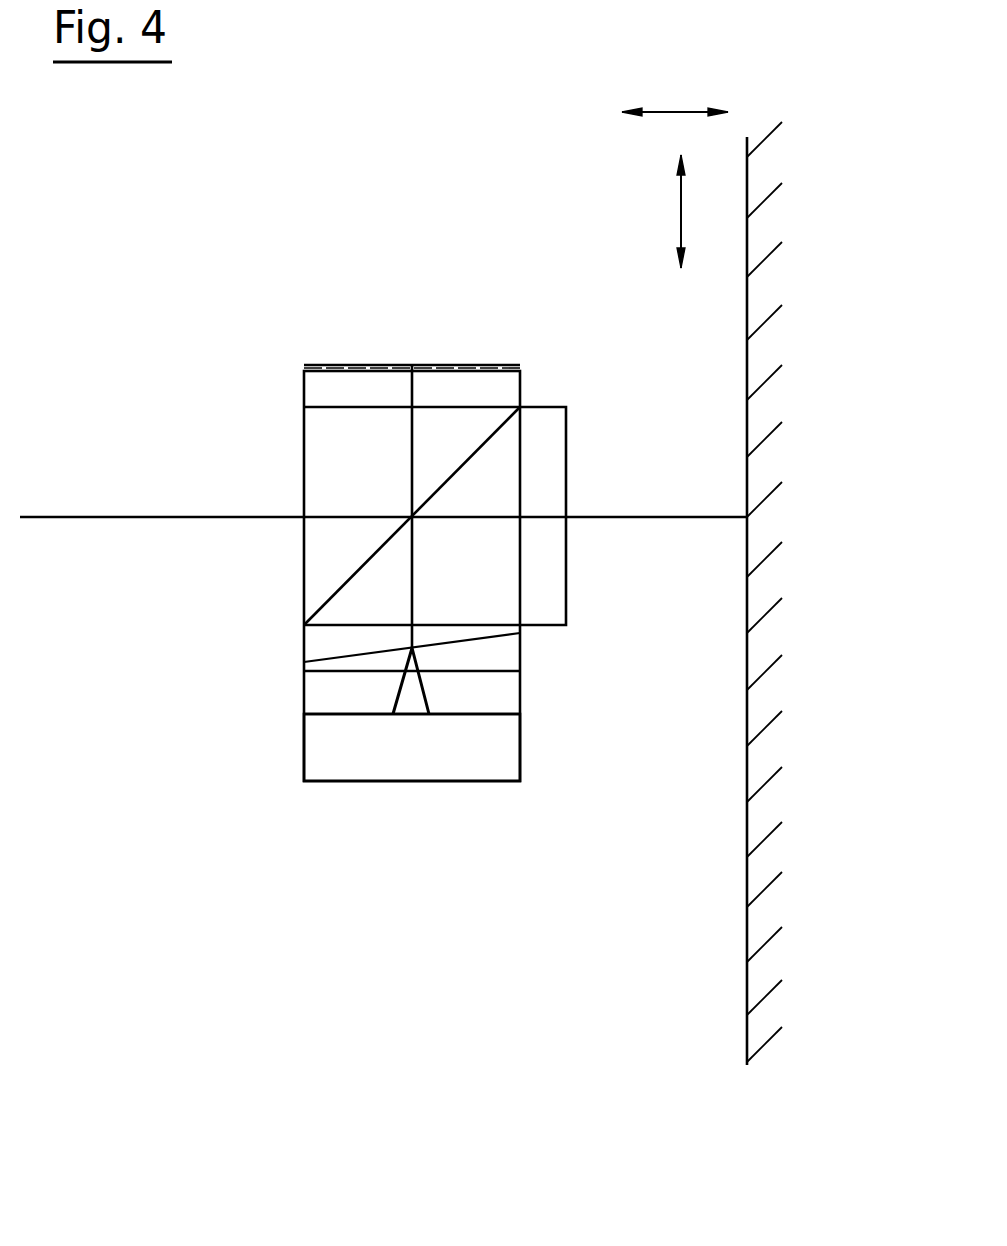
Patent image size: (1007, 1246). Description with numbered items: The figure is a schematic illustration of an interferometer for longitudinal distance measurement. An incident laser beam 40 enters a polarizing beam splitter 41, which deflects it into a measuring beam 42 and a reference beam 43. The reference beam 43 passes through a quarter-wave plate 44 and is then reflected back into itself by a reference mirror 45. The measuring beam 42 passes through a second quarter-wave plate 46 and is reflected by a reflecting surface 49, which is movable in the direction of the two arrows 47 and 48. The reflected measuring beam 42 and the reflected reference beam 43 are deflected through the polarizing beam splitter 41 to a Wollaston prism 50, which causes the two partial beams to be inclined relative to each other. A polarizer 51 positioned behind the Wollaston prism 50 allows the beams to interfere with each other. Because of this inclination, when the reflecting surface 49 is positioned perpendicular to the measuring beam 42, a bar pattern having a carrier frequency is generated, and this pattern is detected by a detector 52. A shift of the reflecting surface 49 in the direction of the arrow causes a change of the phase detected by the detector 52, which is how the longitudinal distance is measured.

The incident laser beam 40 is at (104, 517).
The polarizing beam splitter 41 is at (342, 585).
The measuring beam 42 is at (625, 518).
The reference beam 43 is at (410, 448).
The λ/4-plate 44 is at (505, 388).
The reference mirror 45 is at (415, 365).
The second λ/4-plate 46 is at (547, 457).
The arrow 47 is at (681, 212).
The arrow 48 is at (665, 112).
The reflecting surface 49 is at (747, 823).
The Wollaston prism 50 is at (503, 648).
The polarizer 51 is at (497, 690).
The detector 52 is at (398, 750).